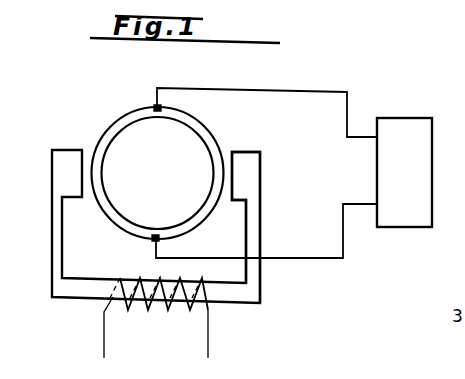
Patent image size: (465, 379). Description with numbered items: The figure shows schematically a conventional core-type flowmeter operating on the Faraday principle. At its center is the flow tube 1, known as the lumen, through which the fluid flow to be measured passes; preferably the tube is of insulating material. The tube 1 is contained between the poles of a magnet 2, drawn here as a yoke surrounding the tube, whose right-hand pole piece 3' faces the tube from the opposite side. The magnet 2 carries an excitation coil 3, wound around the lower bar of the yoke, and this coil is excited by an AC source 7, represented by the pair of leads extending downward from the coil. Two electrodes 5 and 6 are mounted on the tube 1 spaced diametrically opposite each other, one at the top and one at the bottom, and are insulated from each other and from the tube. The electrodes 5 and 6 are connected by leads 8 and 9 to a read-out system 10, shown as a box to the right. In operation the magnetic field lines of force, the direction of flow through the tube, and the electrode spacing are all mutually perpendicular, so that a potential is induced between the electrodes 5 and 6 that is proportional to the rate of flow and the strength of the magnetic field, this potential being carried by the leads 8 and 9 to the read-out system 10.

The flow tube 1 is at (108, 128).
The magnet 2 is at (51, 258).
The excitation coil 3 is at (140, 276).
The pole piece 3' is at (256, 227).
The electrode 5 is at (150, 105).
The electrode 6 is at (152, 238).
The AC source 7 is at (103, 338).
The lead 8 is at (282, 91).
The lead 9 is at (303, 258).
The read-out system 10 is at (393, 186).